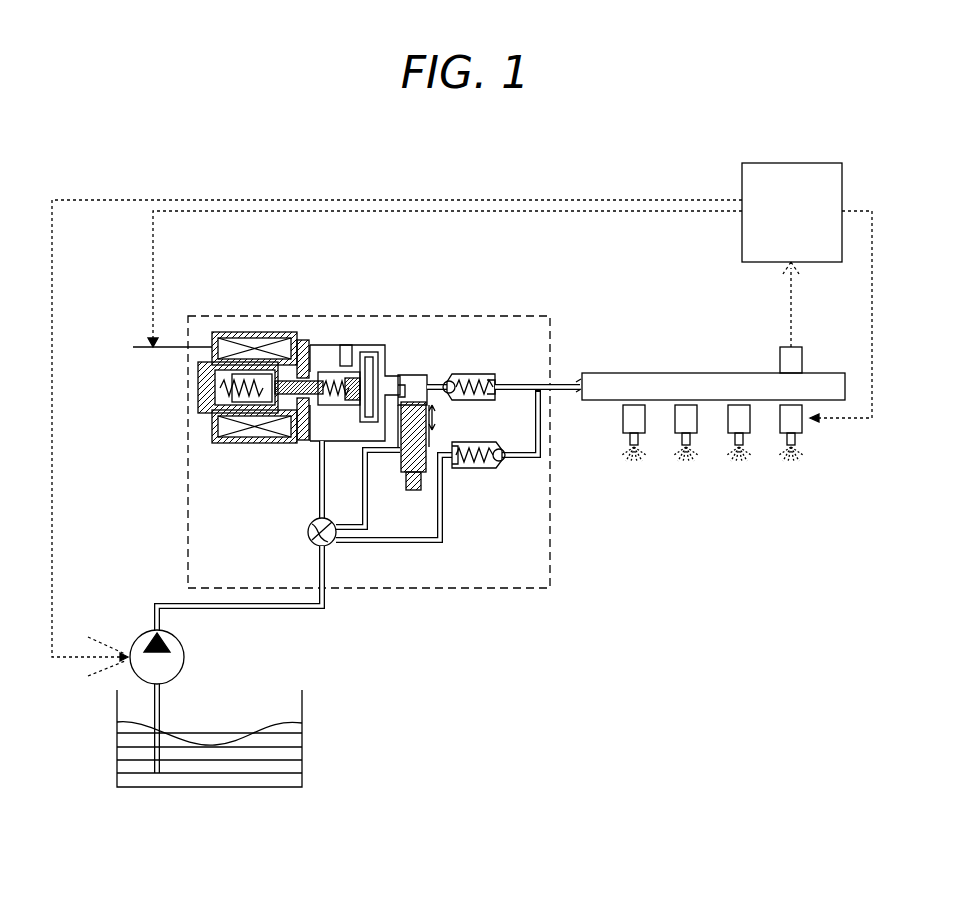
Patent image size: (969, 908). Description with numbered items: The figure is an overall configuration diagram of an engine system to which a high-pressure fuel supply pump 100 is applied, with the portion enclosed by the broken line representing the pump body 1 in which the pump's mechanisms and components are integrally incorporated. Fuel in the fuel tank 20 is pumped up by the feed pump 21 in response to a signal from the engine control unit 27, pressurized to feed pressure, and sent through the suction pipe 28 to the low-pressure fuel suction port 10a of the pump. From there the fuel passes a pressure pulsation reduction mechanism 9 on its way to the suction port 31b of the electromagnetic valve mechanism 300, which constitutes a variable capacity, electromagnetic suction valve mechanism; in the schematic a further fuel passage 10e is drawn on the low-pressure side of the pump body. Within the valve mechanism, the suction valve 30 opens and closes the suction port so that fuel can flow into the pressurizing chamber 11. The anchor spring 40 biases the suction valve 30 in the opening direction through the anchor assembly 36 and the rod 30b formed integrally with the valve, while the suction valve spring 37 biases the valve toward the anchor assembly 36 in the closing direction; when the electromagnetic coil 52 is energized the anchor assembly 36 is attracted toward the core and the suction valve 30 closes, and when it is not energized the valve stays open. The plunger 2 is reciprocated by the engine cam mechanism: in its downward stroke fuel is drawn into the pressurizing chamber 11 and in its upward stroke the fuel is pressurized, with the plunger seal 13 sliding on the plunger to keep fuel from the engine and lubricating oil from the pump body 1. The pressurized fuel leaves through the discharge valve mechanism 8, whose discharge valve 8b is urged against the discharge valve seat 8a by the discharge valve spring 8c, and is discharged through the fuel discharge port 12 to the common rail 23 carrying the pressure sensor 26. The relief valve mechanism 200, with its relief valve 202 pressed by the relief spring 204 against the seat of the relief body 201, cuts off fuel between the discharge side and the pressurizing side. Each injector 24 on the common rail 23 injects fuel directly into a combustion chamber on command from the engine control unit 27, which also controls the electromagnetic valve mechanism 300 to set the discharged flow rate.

The pump body 1 is at (386, 313).
The plunger 2 is at (430, 436).
The discharge valve mechanism 8 is at (490, 316).
The discharge valve seat 8a is at (449, 381).
The discharge valve 8b is at (458, 378).
The discharge valve spring 8c is at (494, 378).
The pressure pulsation reduction mechanism 9 is at (311, 543).
The low-pressure fuel suction port 10a is at (322, 608).
The fuel passage 10e is at (318, 445).
The pressurizing chamber 11 is at (410, 373).
The fuel discharge port 12 is at (555, 385).
The plunger seal 13 is at (400, 477).
The fuel tank 20 is at (292, 752).
The feed pump 21 is at (137, 668).
The common rail 23 is at (660, 373).
The injector 24 is at (796, 426).
The pressure sensor 26 is at (803, 352).
The engine control unit 27 is at (787, 163).
The suction pipe 28 is at (243, 607).
The suction valve 30 is at (352, 350).
The rod 30b is at (222, 437).
The suction port 31b is at (323, 430).
The anchor assembly 36 is at (200, 378).
The suction valve spring 37 is at (318, 372).
The anchor spring 40 is at (208, 400).
The electromagnetic coil 52 is at (218, 334).
The high-pressure fuel supply pump 100 is at (568, 572).
The relief valve mechanism 200 is at (517, 559).
The relief body 201 is at (510, 466).
The relief valve 202 is at (498, 470).
The relief spring 204 is at (472, 468).
The electromagnetic valve mechanism 300 is at (267, 314).